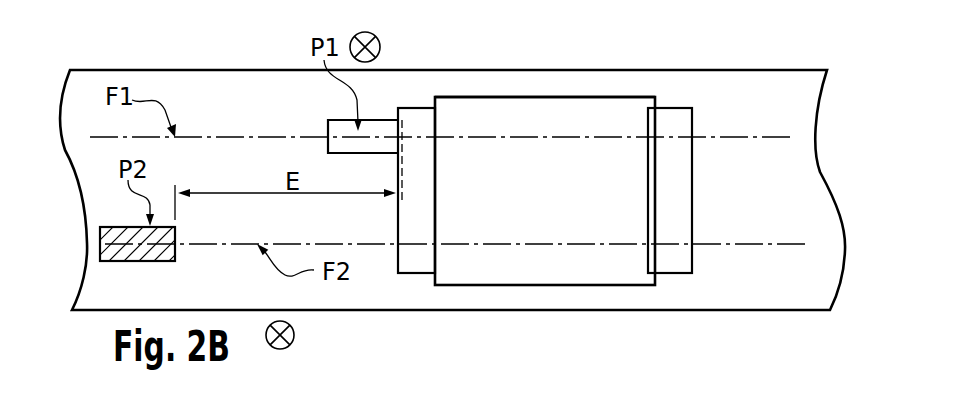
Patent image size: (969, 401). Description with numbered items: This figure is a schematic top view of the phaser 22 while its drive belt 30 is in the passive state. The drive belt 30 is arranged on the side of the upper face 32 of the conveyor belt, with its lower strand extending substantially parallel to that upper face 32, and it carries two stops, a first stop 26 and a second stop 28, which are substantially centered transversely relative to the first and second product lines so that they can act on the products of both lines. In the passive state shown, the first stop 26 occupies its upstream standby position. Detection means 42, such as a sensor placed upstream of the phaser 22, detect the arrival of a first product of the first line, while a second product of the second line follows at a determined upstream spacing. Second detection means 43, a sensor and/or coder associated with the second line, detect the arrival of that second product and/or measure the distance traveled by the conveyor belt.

The phaser 22 is at (556, 198).
The first stop 26 is at (410, 120).
The second stop 28 is at (677, 118).
The drive belt 30 is at (490, 96).
The upper face of the conveyor belt 32 is at (218, 123).
The detection means 42 is at (367, 32).
The second detection means 43 is at (294, 333).